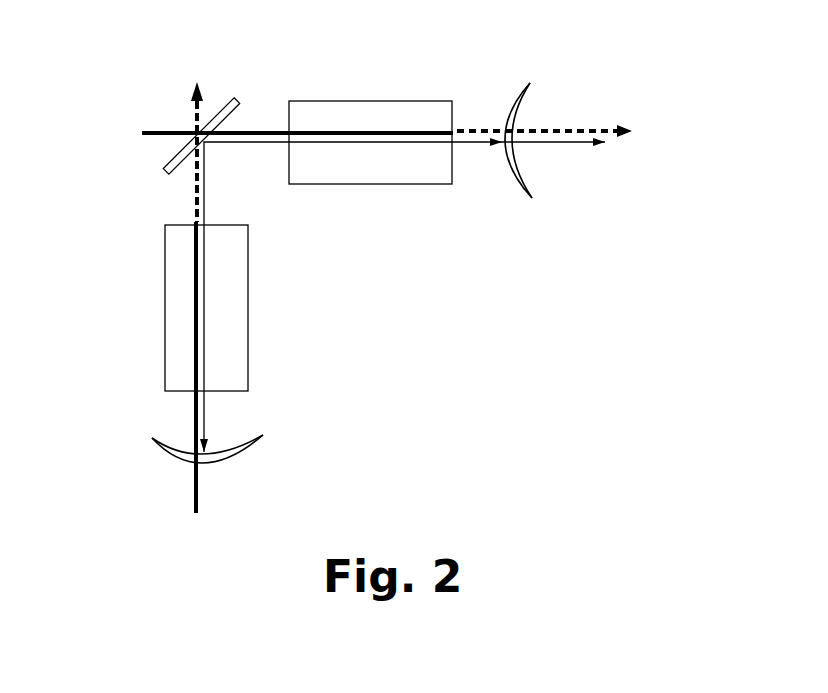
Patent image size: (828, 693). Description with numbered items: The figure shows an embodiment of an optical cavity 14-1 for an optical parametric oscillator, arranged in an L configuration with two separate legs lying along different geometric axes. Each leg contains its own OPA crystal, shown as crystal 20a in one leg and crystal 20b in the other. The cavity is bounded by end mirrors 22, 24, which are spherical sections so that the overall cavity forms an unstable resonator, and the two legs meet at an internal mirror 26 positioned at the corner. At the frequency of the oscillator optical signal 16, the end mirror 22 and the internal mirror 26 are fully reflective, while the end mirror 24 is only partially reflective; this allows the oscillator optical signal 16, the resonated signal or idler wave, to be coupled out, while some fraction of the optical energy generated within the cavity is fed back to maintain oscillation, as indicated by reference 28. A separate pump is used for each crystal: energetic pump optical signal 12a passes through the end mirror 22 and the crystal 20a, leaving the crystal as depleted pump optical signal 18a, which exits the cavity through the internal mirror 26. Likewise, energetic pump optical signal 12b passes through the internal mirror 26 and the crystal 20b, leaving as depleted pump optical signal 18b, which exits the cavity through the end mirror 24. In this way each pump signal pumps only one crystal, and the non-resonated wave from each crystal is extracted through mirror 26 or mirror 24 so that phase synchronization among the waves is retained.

The optical cavity 14-1 is at (508, 395).
The energetic pump optical signal 12a is at (195, 497).
The energetic pump optical signal 12b is at (153, 130).
The oscillator optical signal 16 is at (573, 143).
The depleted pump optical signal 18a is at (192, 92).
The depleted pump optical signal 18b is at (613, 124).
The OPA crystal 20a is at (165, 307).
The OPA crystal 20b is at (372, 100).
The end mirror 22 is at (153, 440).
The end mirror 24 is at (532, 83).
The internal mirror 26 is at (168, 168).
The fed-back optical energy 28 is at (237, 143).